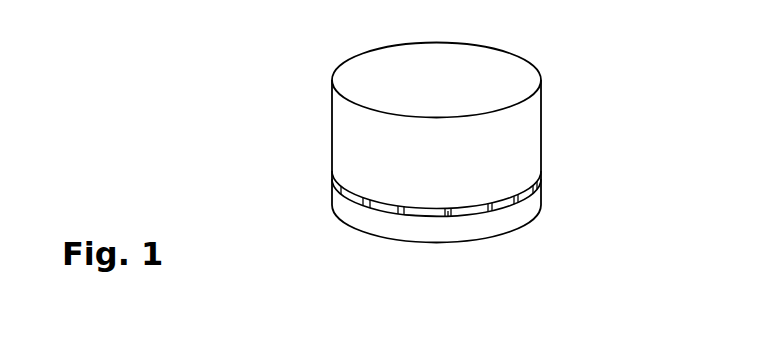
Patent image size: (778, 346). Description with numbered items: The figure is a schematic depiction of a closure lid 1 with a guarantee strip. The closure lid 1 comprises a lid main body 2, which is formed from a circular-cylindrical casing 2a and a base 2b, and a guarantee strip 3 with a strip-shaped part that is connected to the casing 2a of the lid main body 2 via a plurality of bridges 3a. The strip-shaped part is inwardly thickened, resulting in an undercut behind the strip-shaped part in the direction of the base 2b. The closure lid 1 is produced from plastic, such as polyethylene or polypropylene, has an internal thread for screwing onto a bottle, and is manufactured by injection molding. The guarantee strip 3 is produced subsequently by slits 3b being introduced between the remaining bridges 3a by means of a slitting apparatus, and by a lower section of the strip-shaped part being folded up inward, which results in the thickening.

The closure lid 1 is at (459, 149).
The lid main body 2 is at (430, 121).
The circular-cylindrical casing 2a is at (532, 127).
The base 2b is at (398, 62).
The guarantee strip 3 is at (399, 234).
The bridges 3a is at (446, 217).
The slits 3b is at (423, 215).